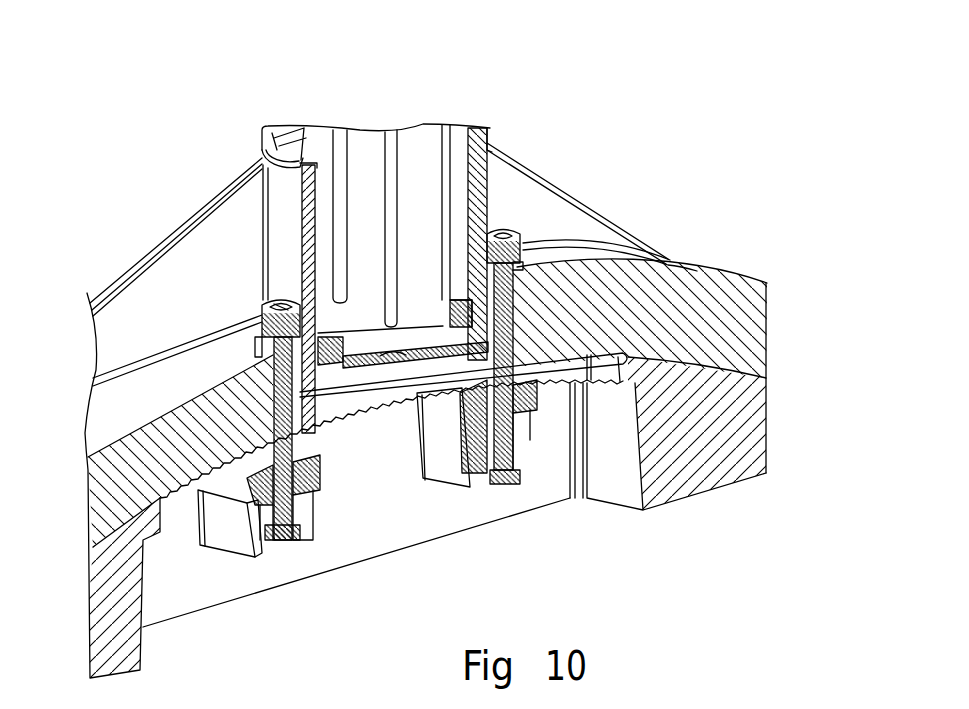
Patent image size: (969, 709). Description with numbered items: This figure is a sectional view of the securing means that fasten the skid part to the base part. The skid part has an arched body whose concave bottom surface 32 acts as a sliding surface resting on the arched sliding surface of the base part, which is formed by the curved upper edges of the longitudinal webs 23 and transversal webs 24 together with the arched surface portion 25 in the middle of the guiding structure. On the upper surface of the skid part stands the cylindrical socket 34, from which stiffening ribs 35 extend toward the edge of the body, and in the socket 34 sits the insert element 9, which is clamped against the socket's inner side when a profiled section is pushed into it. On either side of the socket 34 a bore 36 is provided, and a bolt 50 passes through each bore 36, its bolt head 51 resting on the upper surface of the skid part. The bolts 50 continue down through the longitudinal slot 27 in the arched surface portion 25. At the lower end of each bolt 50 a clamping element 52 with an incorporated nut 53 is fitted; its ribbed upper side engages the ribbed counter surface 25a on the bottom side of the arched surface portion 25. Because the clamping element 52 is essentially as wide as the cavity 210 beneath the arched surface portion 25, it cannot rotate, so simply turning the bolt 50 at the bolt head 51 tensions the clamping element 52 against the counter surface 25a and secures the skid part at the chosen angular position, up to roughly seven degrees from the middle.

The insert element 9 is at (410, 160).
The longitudinal webs 23 is at (403, 537).
The transversal webs 24 is at (628, 497).
The arched surface portion 25 is at (387, 395).
The counter surface 25a is at (342, 422).
The longitudinal slot 27 is at (550, 373).
The concave bottom surface 32 is at (730, 280).
The cylindrical socket 34 is at (488, 152).
The stiffening ribs 35 is at (200, 243).
The bore 36 is at (265, 385).
The bolt 50 is at (250, 455).
The bolt head 51 is at (262, 313).
The clamping element 52 is at (232, 540).
The nut 53 is at (298, 547).
The cavity 210 is at (518, 498).